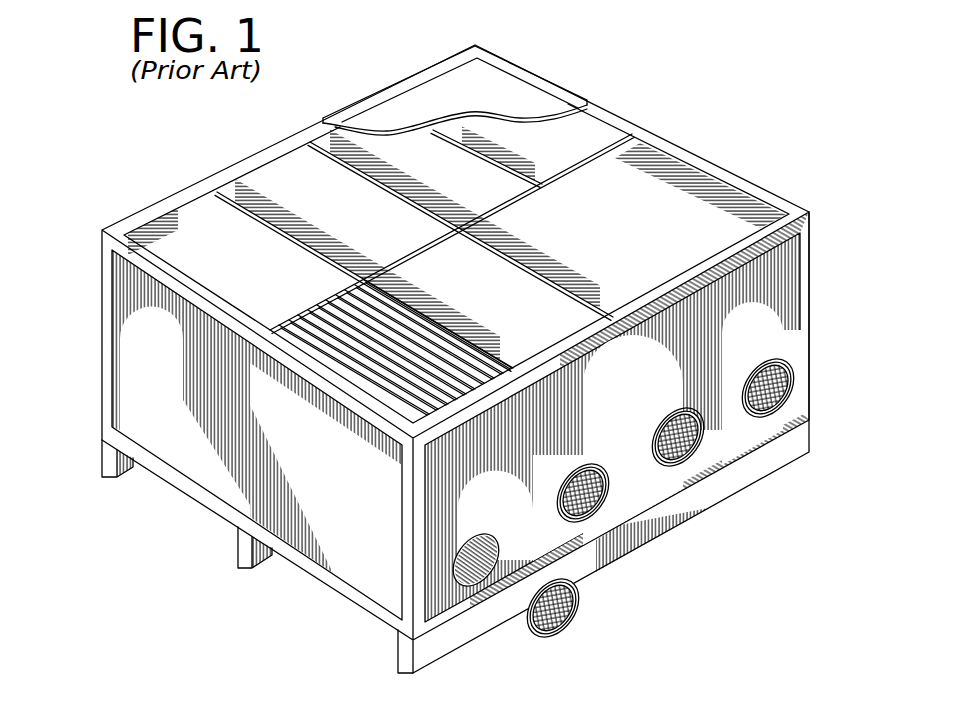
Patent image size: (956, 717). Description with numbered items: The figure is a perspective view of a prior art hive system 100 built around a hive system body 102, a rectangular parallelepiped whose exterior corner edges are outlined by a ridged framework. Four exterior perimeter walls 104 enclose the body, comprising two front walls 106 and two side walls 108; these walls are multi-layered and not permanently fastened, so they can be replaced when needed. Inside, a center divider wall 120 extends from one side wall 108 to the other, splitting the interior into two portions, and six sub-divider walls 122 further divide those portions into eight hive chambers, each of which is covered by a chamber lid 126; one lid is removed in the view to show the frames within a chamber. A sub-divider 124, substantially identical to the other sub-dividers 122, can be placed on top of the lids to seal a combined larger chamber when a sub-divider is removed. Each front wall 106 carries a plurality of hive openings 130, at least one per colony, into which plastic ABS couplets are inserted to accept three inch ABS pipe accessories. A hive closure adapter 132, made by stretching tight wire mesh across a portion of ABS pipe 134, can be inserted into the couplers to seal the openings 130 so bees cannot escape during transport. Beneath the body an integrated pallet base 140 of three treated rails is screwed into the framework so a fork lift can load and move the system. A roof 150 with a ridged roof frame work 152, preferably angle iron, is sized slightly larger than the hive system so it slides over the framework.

The hive system 100 is at (677, 100).
The hive system body 102 is at (806, 216).
The exterior perimeter wall 104 is at (683, 282).
The front wall 106 is at (192, 186).
The side wall 108 is at (703, 157).
The center divider wall 120 is at (568, 168).
The sub-divider wall 122 is at (262, 217).
The sub-divider 124 is at (653, 225).
The chamber lid 126 is at (257, 285).
The hive opening 130 is at (747, 374).
The hive closure adapter 132 is at (672, 408).
The ABS pipe 134 is at (495, 582).
The pallet base 140 is at (105, 459).
The roof 150 is at (400, 102).
The roof frame work 152 is at (527, 76).